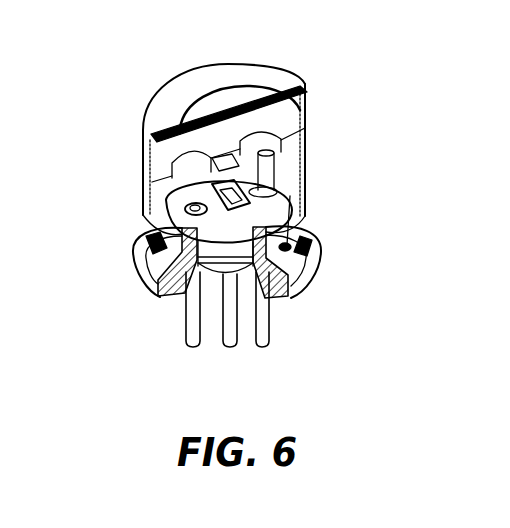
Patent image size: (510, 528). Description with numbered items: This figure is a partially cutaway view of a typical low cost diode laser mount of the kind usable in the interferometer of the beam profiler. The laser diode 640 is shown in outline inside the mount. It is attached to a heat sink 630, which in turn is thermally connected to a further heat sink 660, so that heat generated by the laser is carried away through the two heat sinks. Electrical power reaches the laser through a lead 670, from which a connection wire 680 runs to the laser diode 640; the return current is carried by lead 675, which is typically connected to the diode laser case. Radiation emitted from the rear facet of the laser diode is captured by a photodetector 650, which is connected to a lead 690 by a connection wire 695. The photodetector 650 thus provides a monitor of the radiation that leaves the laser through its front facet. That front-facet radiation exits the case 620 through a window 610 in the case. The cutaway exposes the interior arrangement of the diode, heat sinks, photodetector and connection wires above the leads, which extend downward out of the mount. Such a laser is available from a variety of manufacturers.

The window 610 is at (243, 102).
The case 620 is at (306, 86).
The heat sink 630 is at (305, 118).
The laser diode 640 is at (275, 151).
The photodetector 650 is at (213, 185).
The heat sink 660 is at (260, 210).
The lead 670 is at (269, 333).
The lead 675 is at (232, 348).
The connection wire 680 is at (188, 187).
The lead 690 is at (193, 348).
The connection wire 695 is at (166, 278).